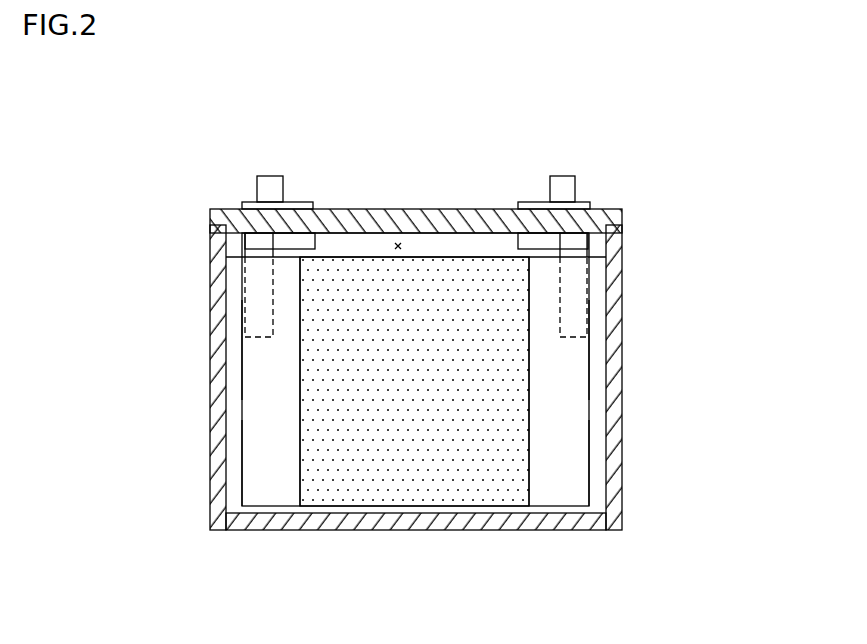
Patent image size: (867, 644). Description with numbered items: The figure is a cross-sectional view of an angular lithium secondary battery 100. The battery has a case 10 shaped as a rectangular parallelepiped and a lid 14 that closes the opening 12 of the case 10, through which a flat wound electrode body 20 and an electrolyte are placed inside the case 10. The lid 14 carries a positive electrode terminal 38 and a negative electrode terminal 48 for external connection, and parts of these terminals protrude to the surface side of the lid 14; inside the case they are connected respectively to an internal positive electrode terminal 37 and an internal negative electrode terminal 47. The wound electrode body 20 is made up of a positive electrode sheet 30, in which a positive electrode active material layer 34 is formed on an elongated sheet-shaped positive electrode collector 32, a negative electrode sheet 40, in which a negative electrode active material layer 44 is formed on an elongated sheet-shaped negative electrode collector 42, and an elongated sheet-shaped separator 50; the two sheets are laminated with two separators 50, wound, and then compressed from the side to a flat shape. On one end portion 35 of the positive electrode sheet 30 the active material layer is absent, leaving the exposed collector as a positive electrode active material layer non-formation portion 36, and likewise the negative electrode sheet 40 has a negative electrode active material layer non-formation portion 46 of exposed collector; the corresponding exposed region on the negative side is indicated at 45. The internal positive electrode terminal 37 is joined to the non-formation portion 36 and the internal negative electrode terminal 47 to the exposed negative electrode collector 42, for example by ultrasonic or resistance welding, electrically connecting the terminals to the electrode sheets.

The lithium secondary battery 100 is at (182, 92).
The case 10 is at (626, 418).
The opening 12 is at (398, 243).
The lid 14 is at (356, 209).
The wound electrode body 20 is at (440, 254).
The positive electrode sheet 30 is at (288, 409).
The positive electrode collector 32 is at (270, 495).
The positive electrode active material layer 34 is at (362, 472).
The end portion 35 is at (242, 349).
The positive electrode active material layer non-formation portion 36 is at (260, 466).
The internal positive electrode terminal 37 is at (257, 250).
The positive electrode terminal 38 is at (268, 181).
The negative electrode sheet 40 is at (573, 408).
The negative electrode collector 42 is at (556, 500).
The negative electrode active material layer 44 is at (503, 470).
The negative electrode uncoated portion 45 is at (588, 355).
The negative electrode active material layer non-formation portion 46 is at (580, 476).
The internal negative electrode terminal 47 is at (575, 252).
The negative electrode terminal 48 is at (563, 181).
The separator 50 is at (428, 490).